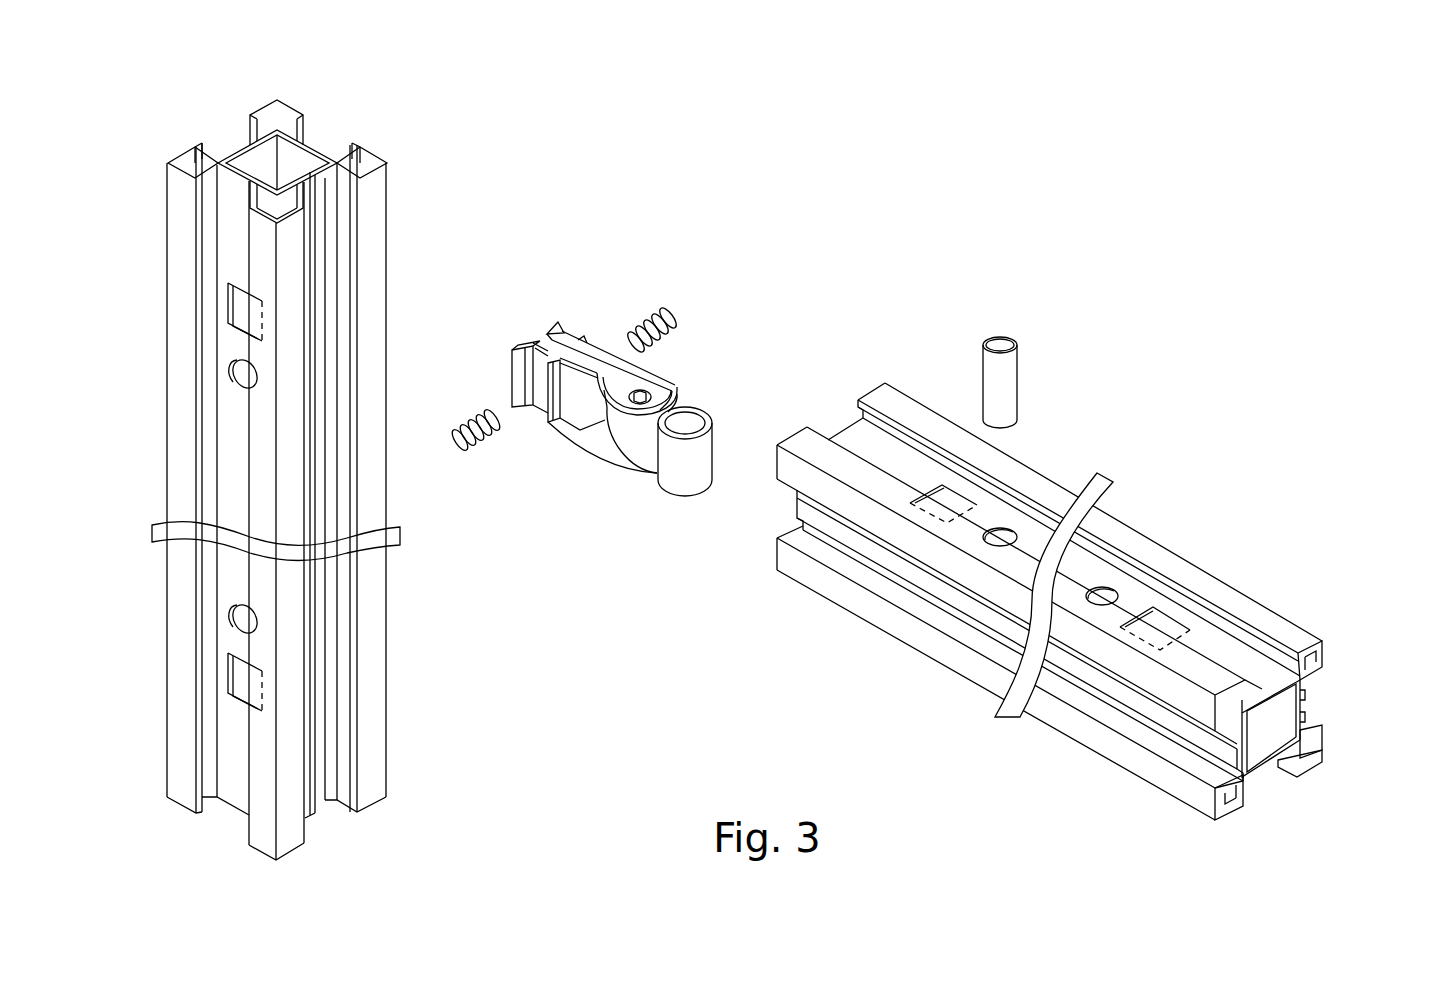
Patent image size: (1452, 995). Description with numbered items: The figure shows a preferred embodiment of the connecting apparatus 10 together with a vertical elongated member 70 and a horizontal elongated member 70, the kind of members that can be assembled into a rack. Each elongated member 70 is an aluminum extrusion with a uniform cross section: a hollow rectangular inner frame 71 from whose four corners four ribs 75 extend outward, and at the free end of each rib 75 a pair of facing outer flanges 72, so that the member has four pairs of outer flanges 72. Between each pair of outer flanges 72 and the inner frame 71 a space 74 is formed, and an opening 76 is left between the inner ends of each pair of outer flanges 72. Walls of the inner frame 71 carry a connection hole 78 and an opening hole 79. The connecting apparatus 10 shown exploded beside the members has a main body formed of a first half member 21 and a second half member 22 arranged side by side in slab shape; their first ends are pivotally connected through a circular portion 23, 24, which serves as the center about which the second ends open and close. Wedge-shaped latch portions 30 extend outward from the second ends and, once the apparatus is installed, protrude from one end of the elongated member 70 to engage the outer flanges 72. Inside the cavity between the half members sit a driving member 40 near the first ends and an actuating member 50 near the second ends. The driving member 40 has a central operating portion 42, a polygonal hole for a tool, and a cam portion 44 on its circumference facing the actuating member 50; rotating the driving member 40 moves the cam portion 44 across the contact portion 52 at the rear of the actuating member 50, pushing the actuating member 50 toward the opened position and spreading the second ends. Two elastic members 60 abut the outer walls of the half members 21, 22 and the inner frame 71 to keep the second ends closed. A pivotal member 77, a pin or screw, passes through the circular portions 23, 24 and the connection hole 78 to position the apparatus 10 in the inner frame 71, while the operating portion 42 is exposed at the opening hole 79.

The connecting apparatus 10 is at (637, 265).
The first half member 21 is at (620, 350).
The second half member 22 is at (585, 430).
The circular portion 23 is at (703, 420).
The circular portion 24 is at (660, 470).
The latch portion 30 is at (515, 343).
The driving member 40 is at (652, 395).
The operating portion 42 is at (676, 383).
The cam portion 44 is at (600, 445).
The actuating member 50 is at (600, 352).
The contact portion 52 is at (545, 410).
The elastic member 60 is at (462, 428).
The elongated member 70 is at (392, 143).
The inner frame 71 is at (243, 160).
The outer flange 72 is at (372, 200).
The space 74 is at (212, 170).
The rib 75 is at (345, 160).
The opening 76 is at (322, 140).
The pivotal member 77 is at (1010, 380).
The connection hole 78 is at (240, 376).
The opening hole 79 is at (228, 306).